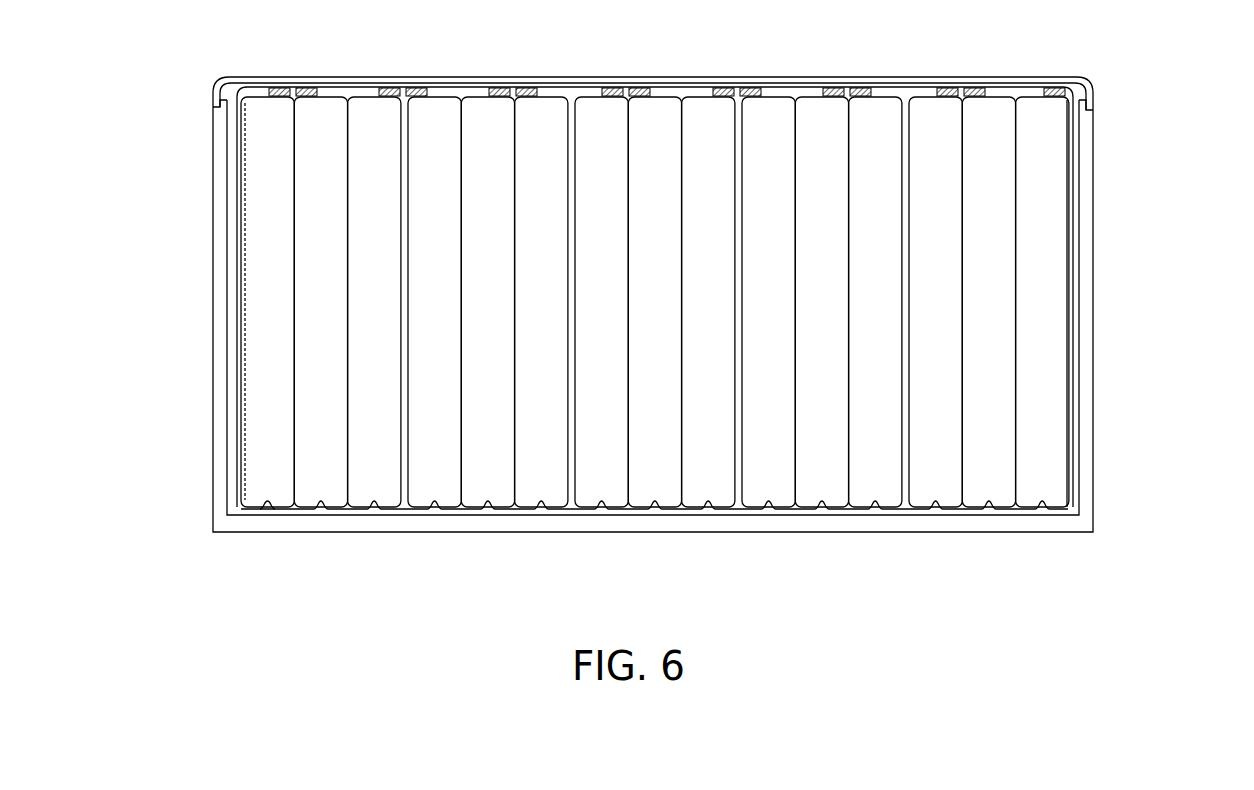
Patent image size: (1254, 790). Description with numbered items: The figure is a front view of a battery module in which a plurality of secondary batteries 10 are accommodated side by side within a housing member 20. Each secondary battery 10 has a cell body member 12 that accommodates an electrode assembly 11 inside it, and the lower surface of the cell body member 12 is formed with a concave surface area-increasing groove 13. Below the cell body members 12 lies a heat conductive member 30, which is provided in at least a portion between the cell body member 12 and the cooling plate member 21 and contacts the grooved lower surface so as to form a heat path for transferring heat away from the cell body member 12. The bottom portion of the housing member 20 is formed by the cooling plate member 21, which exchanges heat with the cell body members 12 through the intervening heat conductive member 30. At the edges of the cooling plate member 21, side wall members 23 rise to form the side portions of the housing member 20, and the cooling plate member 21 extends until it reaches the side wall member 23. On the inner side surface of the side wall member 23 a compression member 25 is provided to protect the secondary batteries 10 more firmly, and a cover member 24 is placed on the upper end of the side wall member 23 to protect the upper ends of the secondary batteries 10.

The secondary battery 10 is at (137, 322).
The electrode assembly 11 is at (245, 325).
The cell body member 12 is at (238, 378).
The surface area-increasing groove 13 is at (265, 500).
The housing member 20 is at (1197, 150).
The cooling plate member 21 is at (1033, 533).
The side wall member 23 is at (1085, 290).
The cover member 24 is at (1065, 77).
The compression member 25 is at (1072, 222).
The heat conductive member 30 is at (374, 509).